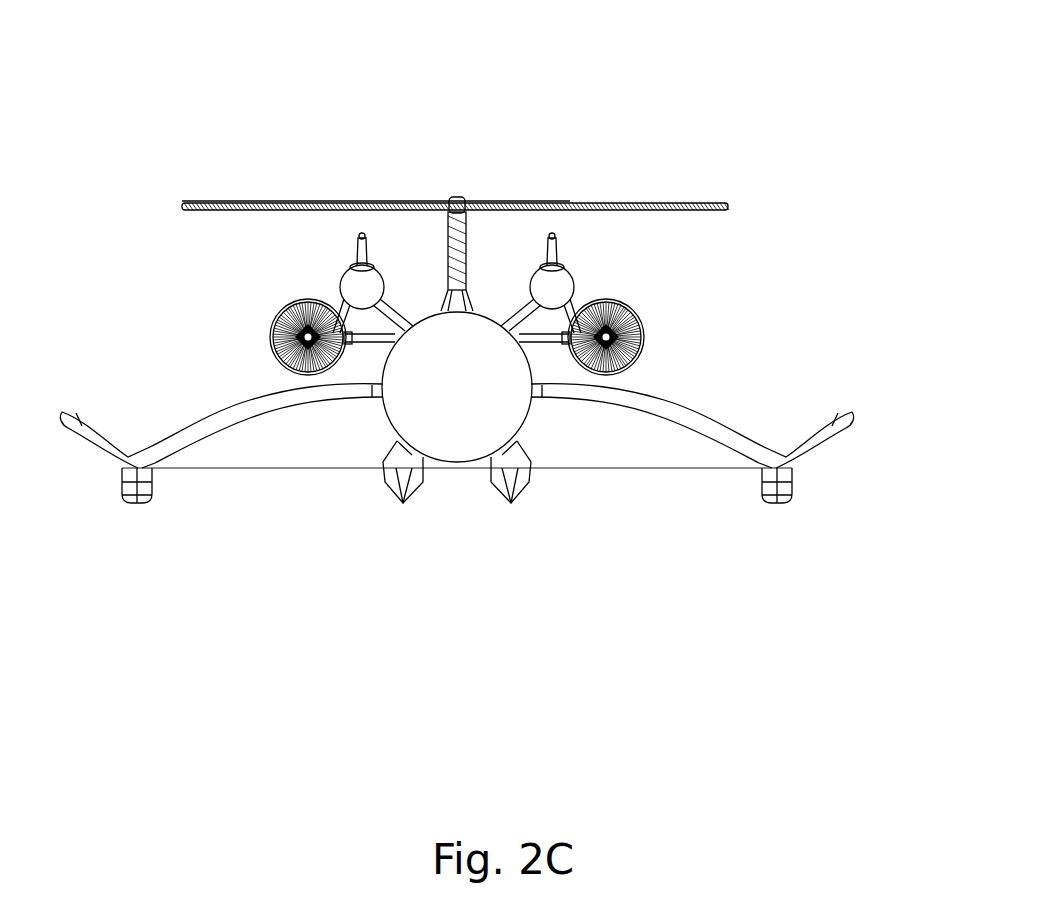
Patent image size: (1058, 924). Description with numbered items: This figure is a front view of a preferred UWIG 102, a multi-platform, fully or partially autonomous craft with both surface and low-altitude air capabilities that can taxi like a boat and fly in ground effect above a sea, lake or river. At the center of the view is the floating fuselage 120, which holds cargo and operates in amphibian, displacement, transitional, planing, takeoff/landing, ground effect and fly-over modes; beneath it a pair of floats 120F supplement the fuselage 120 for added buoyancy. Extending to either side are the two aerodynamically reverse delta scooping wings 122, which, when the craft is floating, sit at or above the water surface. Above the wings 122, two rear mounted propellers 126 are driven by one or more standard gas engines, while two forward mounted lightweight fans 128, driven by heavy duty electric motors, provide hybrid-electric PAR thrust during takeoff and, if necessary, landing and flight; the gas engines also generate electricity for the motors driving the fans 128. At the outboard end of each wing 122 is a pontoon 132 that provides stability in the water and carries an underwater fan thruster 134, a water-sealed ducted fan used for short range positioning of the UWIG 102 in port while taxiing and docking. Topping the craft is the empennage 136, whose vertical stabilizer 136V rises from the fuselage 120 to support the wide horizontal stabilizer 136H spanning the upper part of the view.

The UWIG 102 is at (856, 637).
The floating fuselage 120 is at (477, 409).
The floats 120F is at (518, 490).
The wings 122 is at (207, 417).
The rear mounted propellers 126 is at (343, 277).
The forward mounted fans 128 is at (270, 343).
The outboard pontoons 132 is at (150, 487).
The underwater fan thrusters 134 is at (125, 487).
The empennage 136 is at (156, 103).
The horizontal stabilizer 136H is at (295, 205).
The vertical stabilizer 136V is at (460, 195).